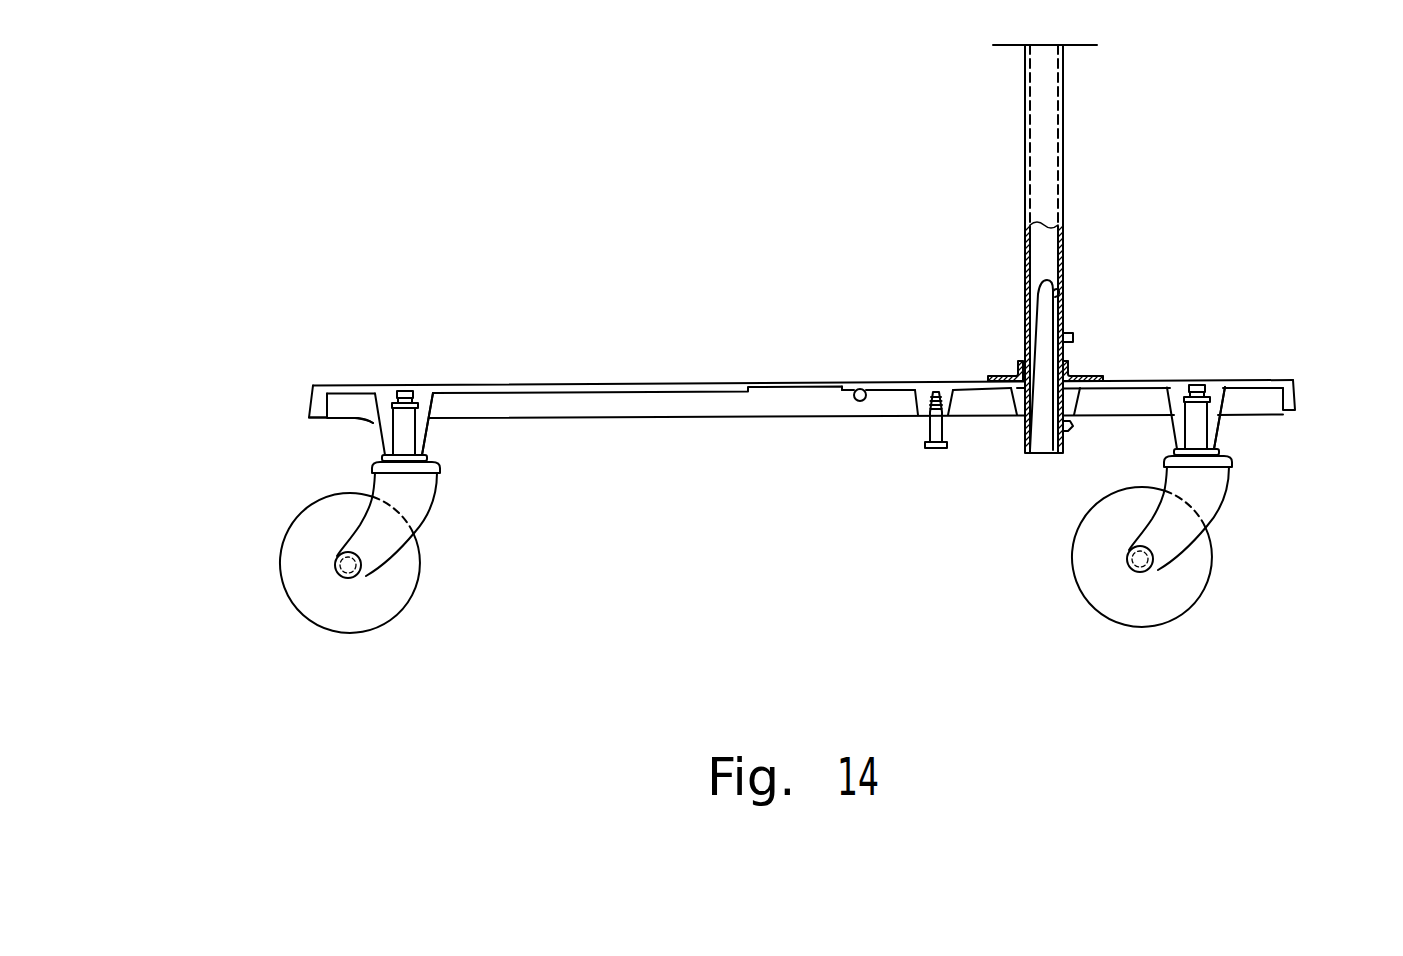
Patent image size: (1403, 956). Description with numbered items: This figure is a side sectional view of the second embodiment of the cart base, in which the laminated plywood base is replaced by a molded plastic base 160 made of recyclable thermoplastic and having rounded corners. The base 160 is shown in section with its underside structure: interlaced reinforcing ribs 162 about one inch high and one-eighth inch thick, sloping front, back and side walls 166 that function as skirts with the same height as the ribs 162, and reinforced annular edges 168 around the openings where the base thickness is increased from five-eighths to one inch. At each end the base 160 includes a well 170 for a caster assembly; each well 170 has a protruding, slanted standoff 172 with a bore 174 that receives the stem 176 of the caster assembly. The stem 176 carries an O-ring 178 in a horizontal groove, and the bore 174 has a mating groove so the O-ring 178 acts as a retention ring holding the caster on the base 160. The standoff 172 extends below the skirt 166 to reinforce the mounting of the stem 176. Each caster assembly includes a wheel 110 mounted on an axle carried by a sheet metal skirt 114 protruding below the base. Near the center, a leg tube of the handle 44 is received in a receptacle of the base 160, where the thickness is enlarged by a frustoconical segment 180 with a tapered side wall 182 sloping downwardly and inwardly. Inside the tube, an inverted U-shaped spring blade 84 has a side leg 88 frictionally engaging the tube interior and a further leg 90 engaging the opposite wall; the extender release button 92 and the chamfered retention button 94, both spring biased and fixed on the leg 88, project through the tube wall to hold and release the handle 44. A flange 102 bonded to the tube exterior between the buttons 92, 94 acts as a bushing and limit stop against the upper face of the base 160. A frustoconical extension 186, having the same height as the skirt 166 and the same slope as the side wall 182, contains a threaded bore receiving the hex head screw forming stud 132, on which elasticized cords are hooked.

The handle 44 is at (1027, 134).
The inverted U-shaped spring blade 84 is at (1028, 295).
The side leg 88 is at (1055, 294).
The further leg 90 is at (1037, 318).
The extender release button 92 is at (1068, 333).
The chamfered retention button 94 is at (1072, 431).
The flange 102 is at (1012, 373).
The wheel 110 is at (395, 583).
The sheet metal skirt 114 is at (417, 503).
The stud 132 is at (935, 423).
The molded plastic base 160 is at (660, 381).
The reinforcing rib 162 is at (612, 405).
The sloping side wall 166 is at (310, 408).
The reinforced annular edge 168 is at (862, 388).
The well 170 is at (438, 447).
The standoff 172 is at (423, 410).
The bore 174 is at (417, 392).
The stem 176 is at (402, 438).
The O-ring 178 is at (393, 397).
The frustoconical segment 180 is at (1017, 400).
The tapered side wall 182 is at (998, 393).
The frustoconical extension 186 is at (915, 402).